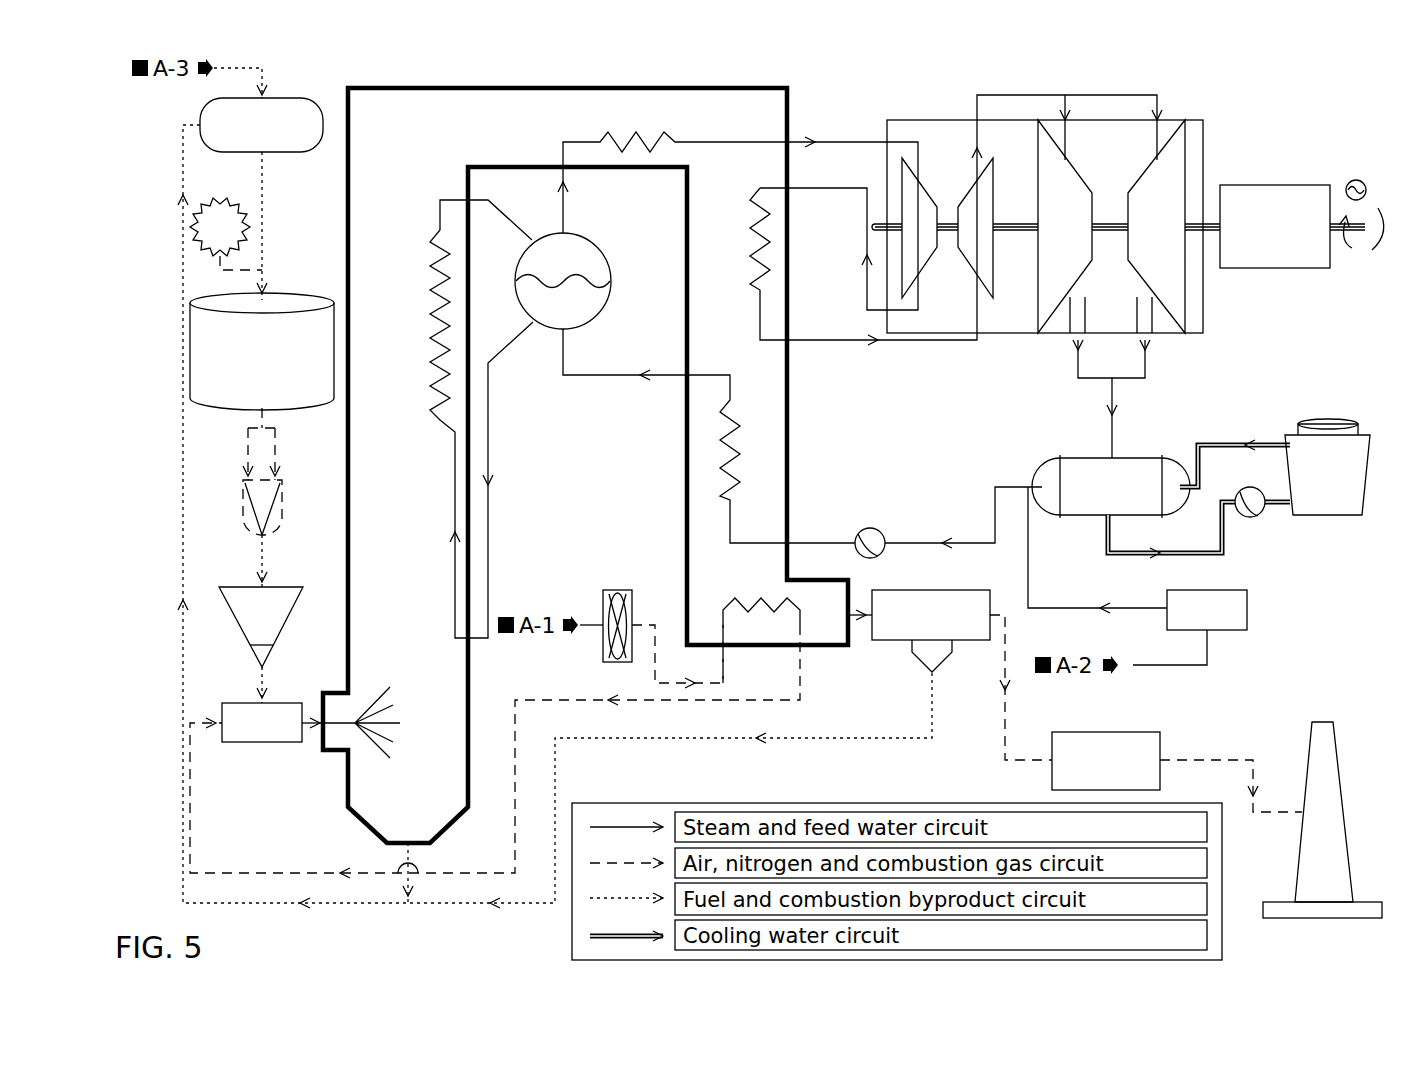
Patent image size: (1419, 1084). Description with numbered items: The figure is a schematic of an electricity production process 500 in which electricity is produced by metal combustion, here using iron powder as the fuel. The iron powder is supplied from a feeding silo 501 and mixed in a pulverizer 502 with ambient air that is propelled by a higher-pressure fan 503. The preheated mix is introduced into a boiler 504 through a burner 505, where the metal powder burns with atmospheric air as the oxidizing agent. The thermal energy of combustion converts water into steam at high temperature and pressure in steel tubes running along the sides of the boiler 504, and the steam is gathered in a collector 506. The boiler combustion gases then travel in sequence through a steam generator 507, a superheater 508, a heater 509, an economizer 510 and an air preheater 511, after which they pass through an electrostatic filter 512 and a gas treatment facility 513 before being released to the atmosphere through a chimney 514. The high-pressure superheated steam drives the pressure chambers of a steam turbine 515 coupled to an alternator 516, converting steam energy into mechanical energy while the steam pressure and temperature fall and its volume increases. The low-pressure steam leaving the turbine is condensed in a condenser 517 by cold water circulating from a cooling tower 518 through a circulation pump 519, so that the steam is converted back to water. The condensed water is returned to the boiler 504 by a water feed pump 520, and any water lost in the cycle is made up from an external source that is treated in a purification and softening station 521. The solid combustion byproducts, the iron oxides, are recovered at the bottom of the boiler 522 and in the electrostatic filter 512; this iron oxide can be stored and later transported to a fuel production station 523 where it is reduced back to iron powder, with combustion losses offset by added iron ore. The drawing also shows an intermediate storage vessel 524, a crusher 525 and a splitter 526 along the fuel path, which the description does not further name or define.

The electricity production process 500 is at (1352, 96).
The feeding silo 501 is at (280, 618).
The pulverizer 502 is at (262, 742).
The higher-pressure fan 503 is at (618, 590).
The boiler 504 is at (790, 95).
The burner 505 is at (406, 690).
The collector 506 is at (598, 256).
The steam generator 507 is at (430, 340).
The superheater 508 is at (608, 140).
The heater 509 is at (752, 250).
The economizer 510 is at (736, 438).
The air preheater 511 is at (752, 600).
The electrostatic filter 512 is at (882, 642).
The gas treatment facility 513 is at (1158, 732).
The chimney 514 is at (1348, 790).
The steam turbine 515 is at (1250, 120).
The alternator 516 is at (1282, 184).
The condenser 517 is at (1050, 472).
The cooling tower 518 is at (1328, 420).
The circulation pump 519 is at (1258, 518).
The water feed pump 520 is at (872, 528).
The purification and softening station 521 is at (1248, 610).
The bottom of the boiler 522 is at (406, 842).
The fuel production station 523 is at (292, 152).
The fuel silo 524 is at (304, 410).
The crusher 525 is at (196, 245).
The fuel splitter 526 is at (282, 520).